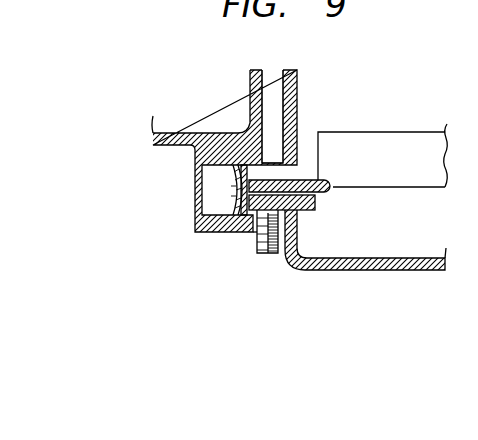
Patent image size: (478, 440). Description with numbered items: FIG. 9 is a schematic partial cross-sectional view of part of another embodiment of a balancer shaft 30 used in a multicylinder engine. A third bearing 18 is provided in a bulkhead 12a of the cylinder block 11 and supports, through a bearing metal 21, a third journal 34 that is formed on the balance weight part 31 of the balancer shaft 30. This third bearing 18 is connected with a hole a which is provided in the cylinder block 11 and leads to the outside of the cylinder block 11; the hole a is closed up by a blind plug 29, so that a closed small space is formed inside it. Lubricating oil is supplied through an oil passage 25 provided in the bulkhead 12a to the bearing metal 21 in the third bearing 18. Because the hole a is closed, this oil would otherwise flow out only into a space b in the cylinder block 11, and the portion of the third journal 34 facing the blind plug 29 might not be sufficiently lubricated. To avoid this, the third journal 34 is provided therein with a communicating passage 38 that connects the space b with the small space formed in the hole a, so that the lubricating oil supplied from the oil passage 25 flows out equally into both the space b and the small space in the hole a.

The cylinder block 11 is at (157, 141).
The bulkhead 12a is at (291, 85).
The third bearing 18 is at (249, 238).
The bearing metal 21 is at (268, 254).
The oil passage 25 is at (273, 78).
The blind plug 29 is at (232, 182).
The balancer shaft 30 is at (239, 220).
The balance weight part 31 is at (371, 146).
The third journal 34 is at (306, 179).
The communicating passage 38 is at (315, 209).
The hole a is at (232, 200).
The space b is at (411, 218).